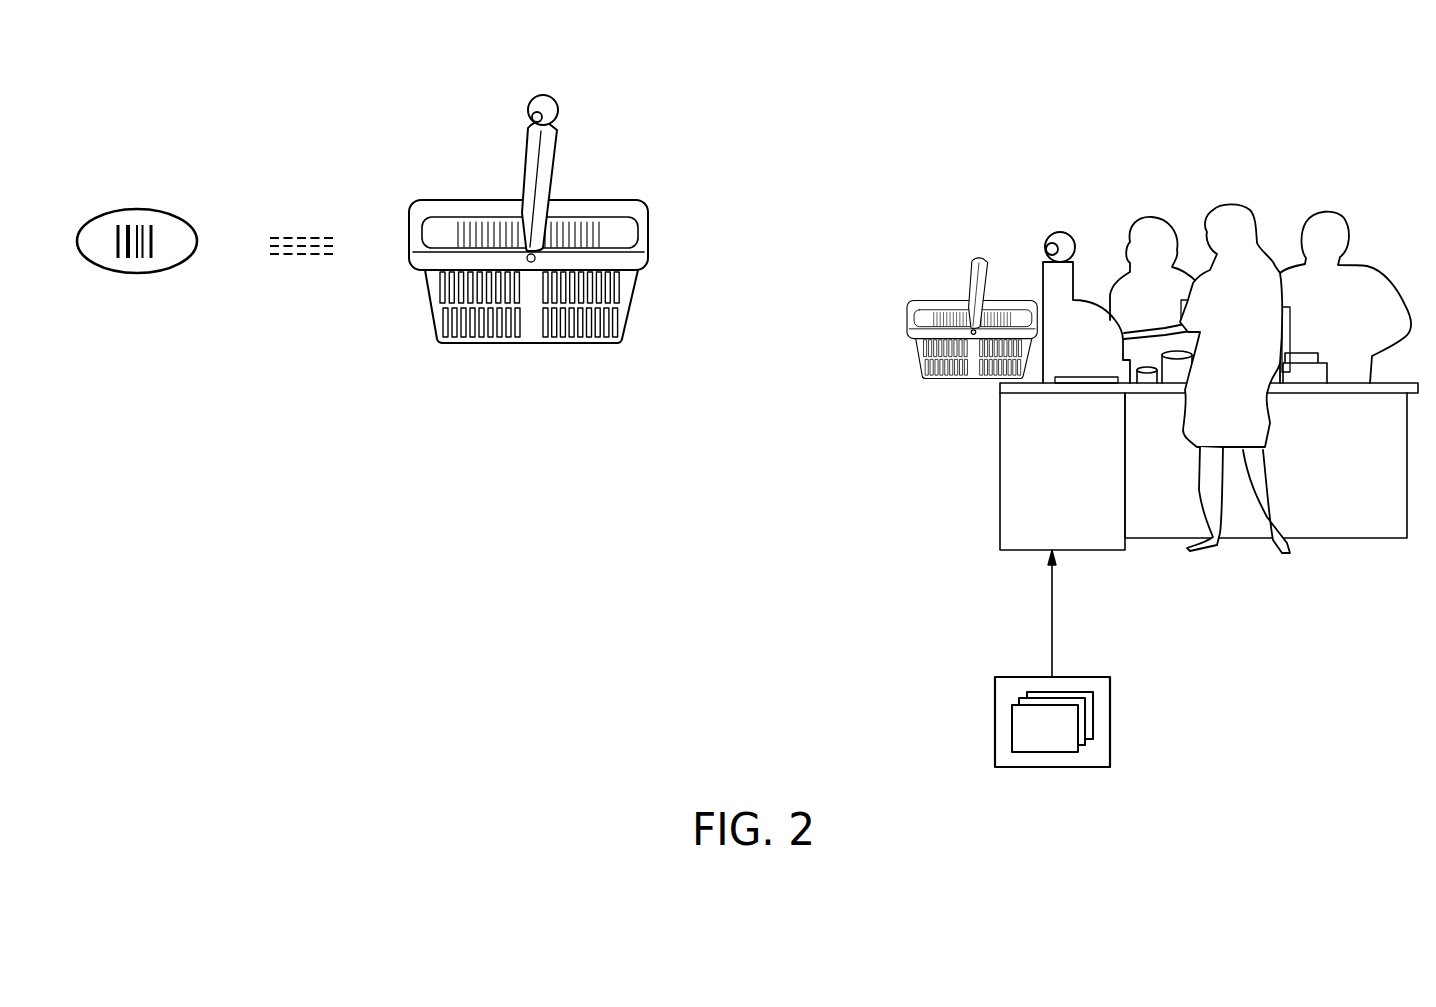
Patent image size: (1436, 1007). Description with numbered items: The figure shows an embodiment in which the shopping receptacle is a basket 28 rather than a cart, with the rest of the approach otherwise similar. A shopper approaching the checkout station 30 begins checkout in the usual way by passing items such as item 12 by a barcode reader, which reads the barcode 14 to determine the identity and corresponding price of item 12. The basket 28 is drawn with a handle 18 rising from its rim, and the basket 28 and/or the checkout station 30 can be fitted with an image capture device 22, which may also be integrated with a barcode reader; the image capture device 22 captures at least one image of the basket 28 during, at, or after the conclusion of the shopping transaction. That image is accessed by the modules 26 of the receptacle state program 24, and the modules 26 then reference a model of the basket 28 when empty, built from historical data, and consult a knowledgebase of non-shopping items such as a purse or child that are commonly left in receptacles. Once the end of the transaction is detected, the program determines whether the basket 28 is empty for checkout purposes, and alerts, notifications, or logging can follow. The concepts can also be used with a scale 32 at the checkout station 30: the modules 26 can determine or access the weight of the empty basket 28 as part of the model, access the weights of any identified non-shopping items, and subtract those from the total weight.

The item 12 is at (136, 209).
The barcode 14 is at (137, 261).
The handle 18 is at (528, 130).
The image capture device 22 is at (543, 95).
The receptacle state program 24 is at (1112, 688).
The modules 26 is at (1093, 725).
The basket 28 is at (457, 200).
The checkout station 30 is at (1178, 397).
The scale 32 is at (997, 387).